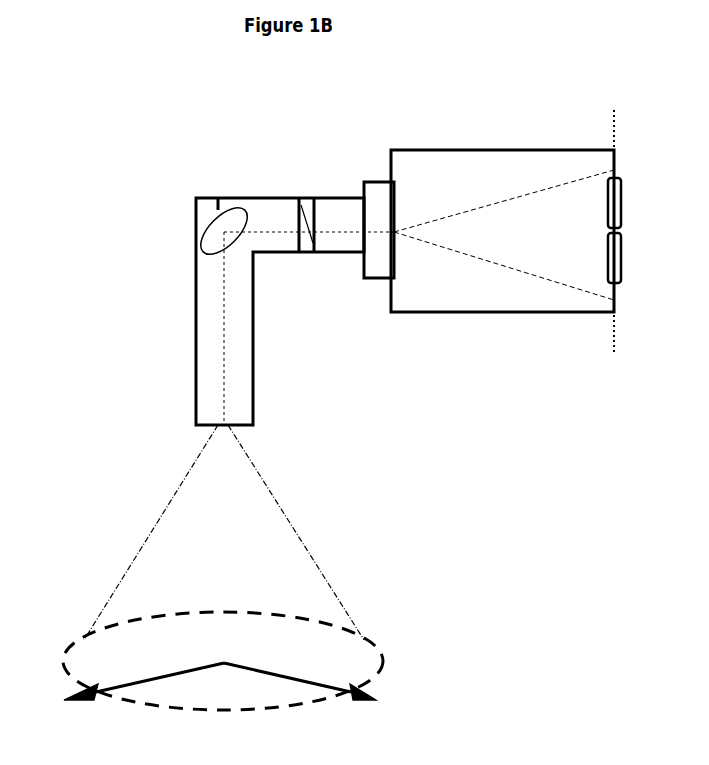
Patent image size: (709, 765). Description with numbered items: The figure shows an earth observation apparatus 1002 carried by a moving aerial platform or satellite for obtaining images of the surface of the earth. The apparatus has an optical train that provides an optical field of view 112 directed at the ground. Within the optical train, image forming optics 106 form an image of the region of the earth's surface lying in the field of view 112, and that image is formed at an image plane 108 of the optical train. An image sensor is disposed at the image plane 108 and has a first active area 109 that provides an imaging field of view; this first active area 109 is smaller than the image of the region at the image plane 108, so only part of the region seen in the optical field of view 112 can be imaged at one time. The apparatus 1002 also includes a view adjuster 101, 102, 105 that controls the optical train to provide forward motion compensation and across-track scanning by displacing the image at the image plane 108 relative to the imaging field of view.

The earth observation apparatus 1002 is at (290, 131).
The view adjuster 101 is at (199, 251).
The view adjuster 102 is at (205, 213).
The view adjuster 105 is at (305, 253).
The image forming optics 106 is at (380, 182).
The image plane 108 is at (614, 128).
The first active area 109 is at (620, 258).
The optical field of view 112 is at (375, 678).